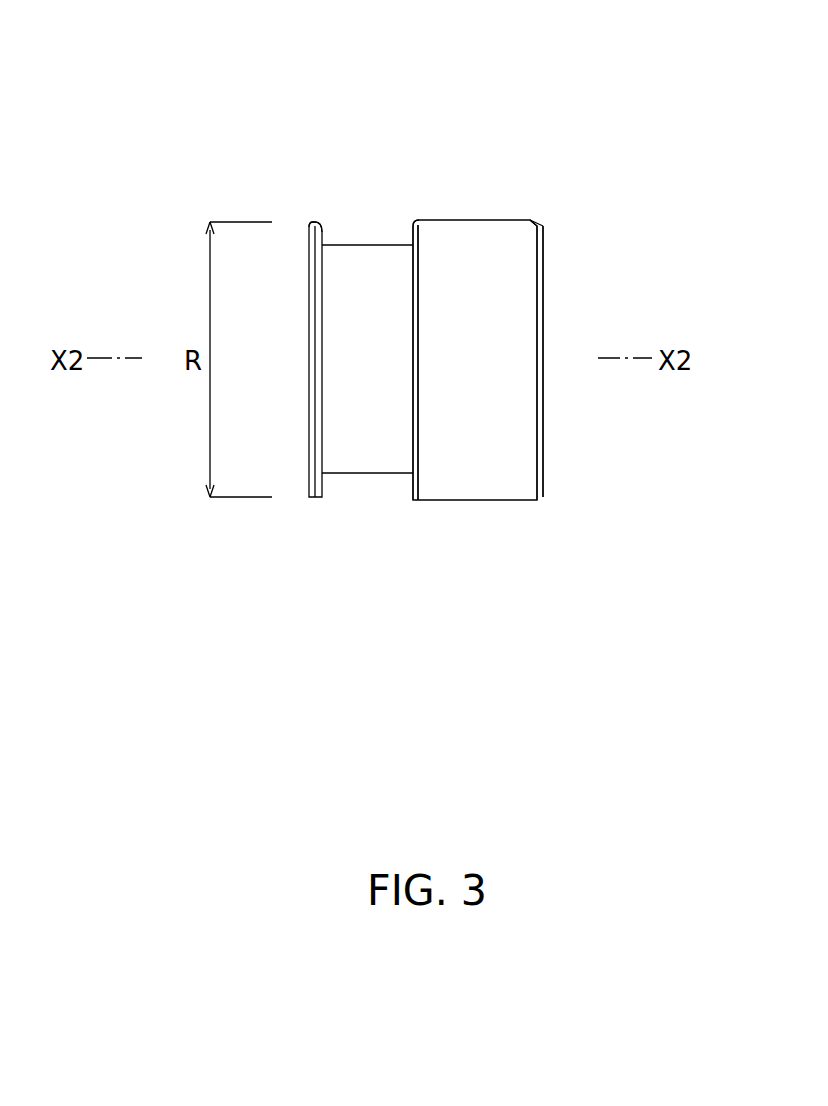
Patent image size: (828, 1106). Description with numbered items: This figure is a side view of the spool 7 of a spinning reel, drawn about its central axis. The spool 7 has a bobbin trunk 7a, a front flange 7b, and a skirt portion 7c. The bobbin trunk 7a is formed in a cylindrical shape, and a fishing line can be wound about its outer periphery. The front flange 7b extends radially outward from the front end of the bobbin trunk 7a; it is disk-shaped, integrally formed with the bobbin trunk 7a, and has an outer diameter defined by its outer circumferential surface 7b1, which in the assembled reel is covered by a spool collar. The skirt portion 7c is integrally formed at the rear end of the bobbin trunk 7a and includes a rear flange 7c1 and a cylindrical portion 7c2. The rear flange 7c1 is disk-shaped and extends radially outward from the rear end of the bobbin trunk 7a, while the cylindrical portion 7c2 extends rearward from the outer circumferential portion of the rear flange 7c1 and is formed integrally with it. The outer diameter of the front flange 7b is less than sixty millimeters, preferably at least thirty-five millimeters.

The spool 7 is at (428, 168).
The bobbin trunk 7a is at (368, 302).
The front flange 7b is at (313, 445).
The outer circumferential surface 7b1 is at (313, 222).
The skirt portion 7c is at (527, 658).
The rear flange 7c1 is at (415, 385).
The cylindrical portion 7c2 is at (487, 448).